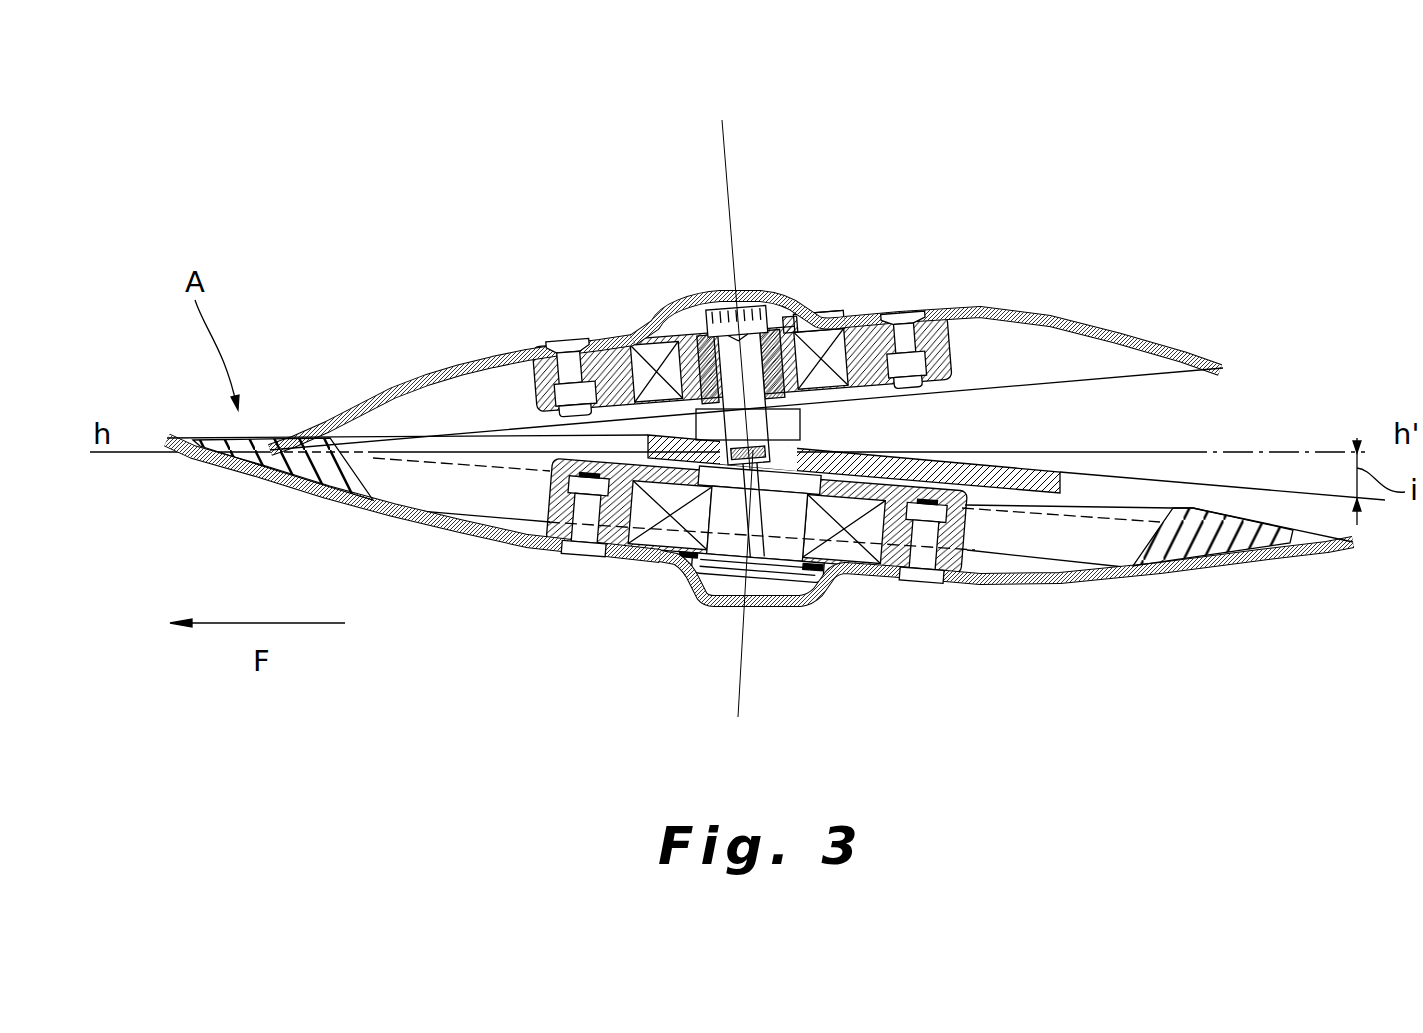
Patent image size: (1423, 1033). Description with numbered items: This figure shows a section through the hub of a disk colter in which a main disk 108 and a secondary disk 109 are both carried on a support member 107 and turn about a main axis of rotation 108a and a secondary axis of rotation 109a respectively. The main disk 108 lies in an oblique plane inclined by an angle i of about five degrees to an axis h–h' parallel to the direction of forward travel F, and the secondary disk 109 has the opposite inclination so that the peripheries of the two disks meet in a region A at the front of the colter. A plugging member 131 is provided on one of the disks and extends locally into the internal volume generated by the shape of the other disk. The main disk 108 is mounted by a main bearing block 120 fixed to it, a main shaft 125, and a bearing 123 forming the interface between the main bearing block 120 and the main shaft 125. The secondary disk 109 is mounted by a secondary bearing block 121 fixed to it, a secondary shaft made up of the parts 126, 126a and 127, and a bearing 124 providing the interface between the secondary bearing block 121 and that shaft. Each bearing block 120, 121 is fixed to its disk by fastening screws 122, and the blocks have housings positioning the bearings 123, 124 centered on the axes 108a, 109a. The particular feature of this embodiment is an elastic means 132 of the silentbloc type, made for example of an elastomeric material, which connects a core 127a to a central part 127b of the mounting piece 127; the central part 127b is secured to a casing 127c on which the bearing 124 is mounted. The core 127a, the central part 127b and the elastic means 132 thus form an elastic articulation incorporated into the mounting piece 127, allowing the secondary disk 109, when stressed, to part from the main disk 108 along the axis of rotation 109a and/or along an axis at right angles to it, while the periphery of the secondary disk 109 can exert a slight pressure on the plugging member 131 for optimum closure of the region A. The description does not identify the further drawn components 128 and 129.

The support member 107 is at (1040, 473).
The main disk 108 is at (1223, 570).
The main axis of rotation 108a is at (742, 686).
The secondary disk 109 is at (1125, 330).
The secondary axis of rotation 109a is at (722, 155).
The main bearing block 120 is at (525, 545).
The secondary bearing block 121 is at (520, 377).
The fastening screws 122 is at (580, 342).
The bearing 123 is at (870, 578).
The bearing 124 is at (830, 318).
The main shaft 125 is at (700, 600).
The secondary shaft 126 is at (790, 430).
The secondary shaft 126a is at (768, 308).
The mounting piece 127 is at (797, 317).
The core 127a is at (777, 400).
The central part 127b is at (697, 317).
The casing 127c is at (650, 312).
The seal ring 128 is at (815, 312).
The lower bearings 129 is at (847, 558).
The plugging member 131 is at (394, 487).
The elastic means 132 is at (803, 312).